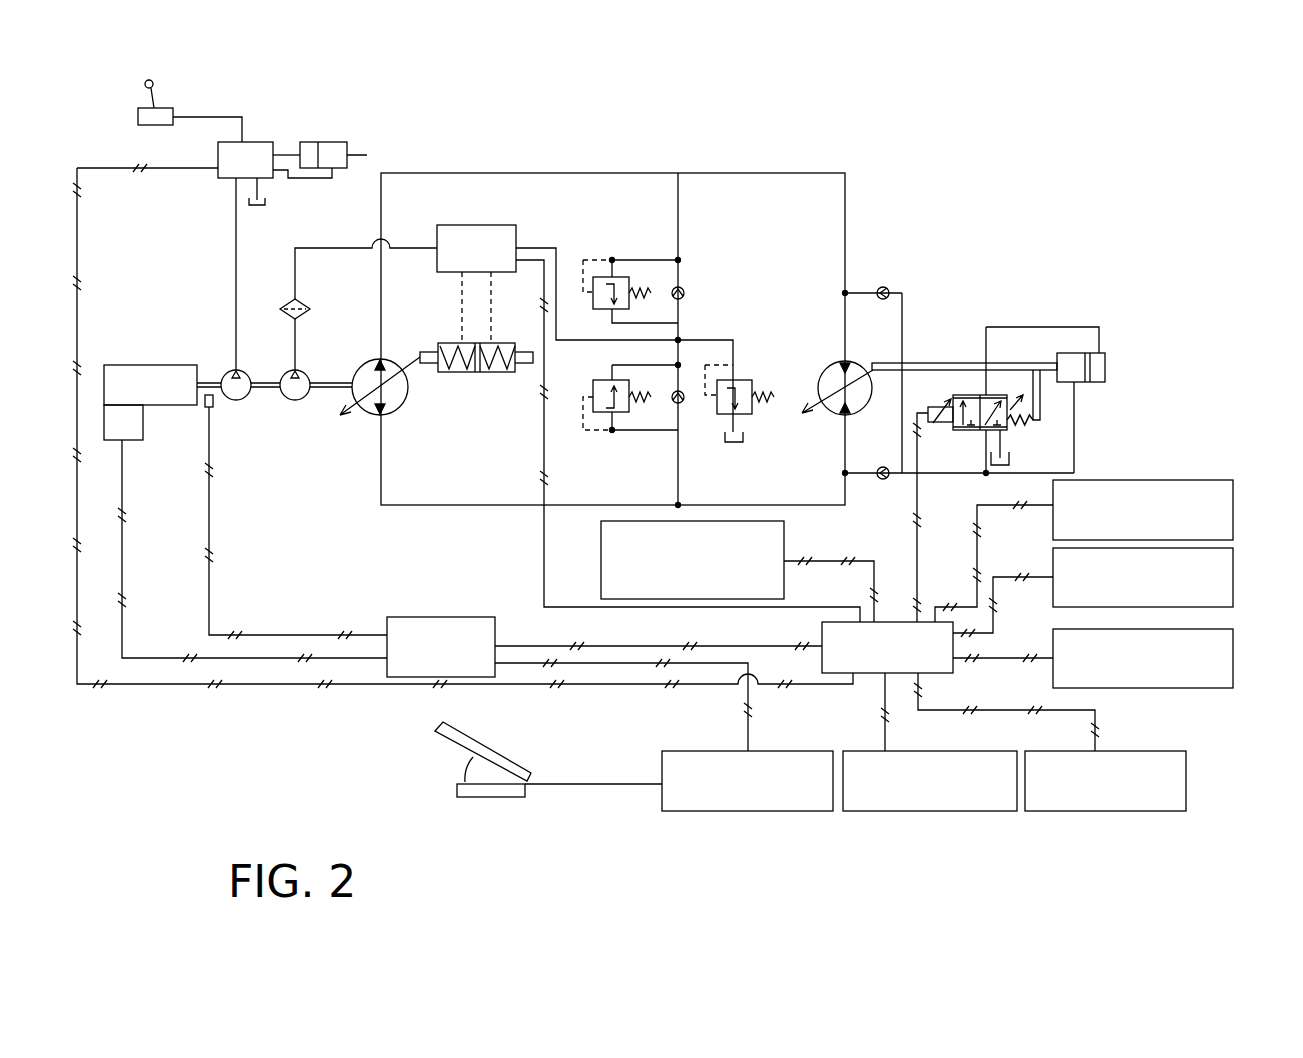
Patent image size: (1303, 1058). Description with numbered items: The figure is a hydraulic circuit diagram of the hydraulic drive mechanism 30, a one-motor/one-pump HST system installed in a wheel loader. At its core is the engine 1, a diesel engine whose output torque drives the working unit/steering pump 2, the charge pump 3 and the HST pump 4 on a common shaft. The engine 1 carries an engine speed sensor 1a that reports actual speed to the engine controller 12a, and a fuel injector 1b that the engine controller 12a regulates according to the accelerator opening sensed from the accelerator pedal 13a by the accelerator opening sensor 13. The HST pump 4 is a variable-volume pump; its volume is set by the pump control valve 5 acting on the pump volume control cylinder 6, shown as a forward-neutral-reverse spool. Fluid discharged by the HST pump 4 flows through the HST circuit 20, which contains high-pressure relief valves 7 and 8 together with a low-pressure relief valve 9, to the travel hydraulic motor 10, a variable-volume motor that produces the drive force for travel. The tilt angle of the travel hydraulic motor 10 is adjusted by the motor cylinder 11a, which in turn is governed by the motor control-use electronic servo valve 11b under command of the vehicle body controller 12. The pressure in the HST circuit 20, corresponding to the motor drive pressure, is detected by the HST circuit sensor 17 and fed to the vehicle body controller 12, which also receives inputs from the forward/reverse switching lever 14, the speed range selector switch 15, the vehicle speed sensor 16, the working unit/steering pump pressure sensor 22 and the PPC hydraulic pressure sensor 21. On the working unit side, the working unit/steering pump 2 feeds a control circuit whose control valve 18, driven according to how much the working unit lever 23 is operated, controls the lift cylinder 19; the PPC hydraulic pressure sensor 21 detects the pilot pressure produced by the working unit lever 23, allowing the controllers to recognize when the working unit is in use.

The engine 1 is at (177, 365).
The engine speed sensor 1a is at (212, 408).
The fuel injector 1b is at (143, 432).
The working unit/steering pump 2 is at (243, 371).
The charge pump 3 is at (302, 371).
The HST pump 4 is at (393, 360).
The pump control valve 5 is at (500, 225).
The pump volume control cylinder 6 is at (487, 372).
The high-pressure relief valve 7 is at (630, 242).
The high-pressure relief valve 8 is at (624, 445).
The low-pressure relief valve 9 is at (748, 362).
The travel hydraulic motor 10 is at (832, 365).
The motor cylinder 11a is at (1100, 353).
The motor control-use electronic servo valve 11b is at (972, 395).
The vehicle body controller 12 is at (893, 620).
The engine controller 12a is at (455, 617).
The accelerator opening sensor 13 is at (662, 797).
The accelerator pedal 13a is at (490, 757).
The forward/reverse switching lever 14 is at (985, 751).
The speed range selector switch 15 is at (1186, 795).
The vehicle speed sensor 16 is at (1233, 670).
The HST circuit sensor 17 is at (1233, 588).
The control valve 18 is at (218, 157).
The lift cylinder 19 is at (340, 170).
The HST circuit 20 is at (812, 172).
The PPC hydraulic pressure sensor 21 is at (1233, 522).
The working unit/steering pump pressure sensor 22 is at (601, 580).
The working unit lever 23 is at (138, 117).
The hydraulic drive mechanism 30 is at (930, 143).